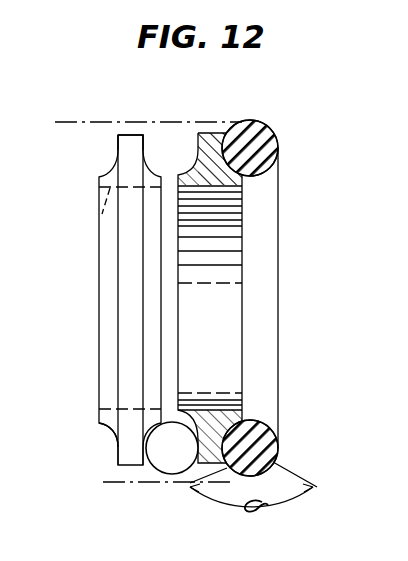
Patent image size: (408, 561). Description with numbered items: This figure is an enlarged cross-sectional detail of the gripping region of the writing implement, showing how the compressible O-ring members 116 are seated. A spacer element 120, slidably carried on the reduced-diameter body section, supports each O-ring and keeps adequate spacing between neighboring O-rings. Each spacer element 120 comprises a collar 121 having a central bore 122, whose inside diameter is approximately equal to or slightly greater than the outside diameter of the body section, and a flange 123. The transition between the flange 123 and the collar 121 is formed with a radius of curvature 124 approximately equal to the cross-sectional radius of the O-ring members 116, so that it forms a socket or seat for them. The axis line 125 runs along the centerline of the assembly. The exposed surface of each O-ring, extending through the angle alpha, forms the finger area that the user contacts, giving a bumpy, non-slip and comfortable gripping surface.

The compressible O-ring member 116 is at (262, 129).
The spacer element 120 is at (198, 460).
The collar 121 is at (100, 313).
The central bore 122 is at (100, 214).
The flange 123 is at (122, 144).
The radius of curvature 124 is at (112, 435).
The axis 125 is at (197, 100).